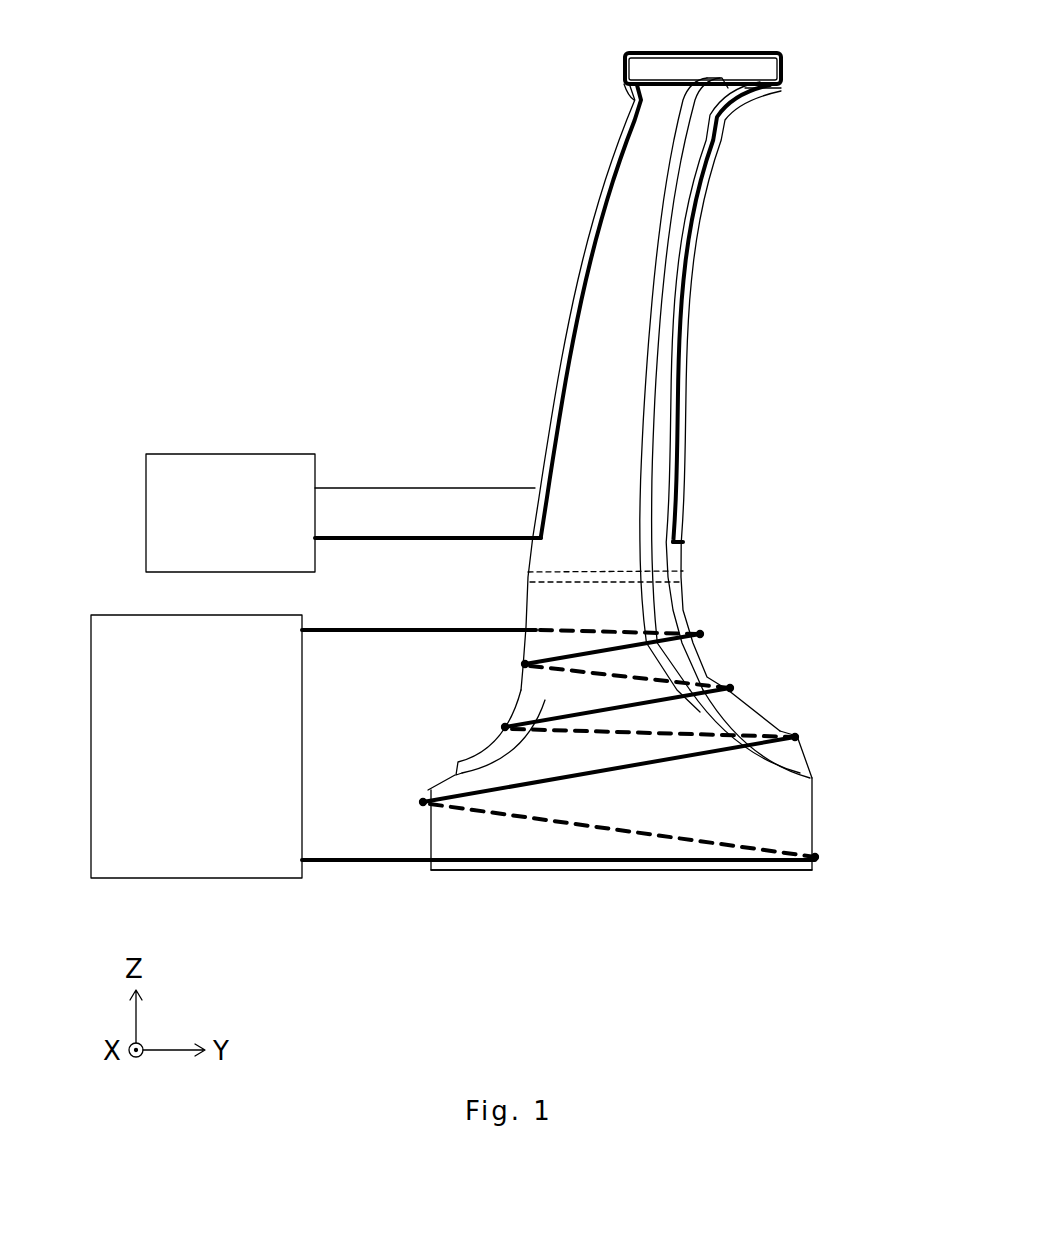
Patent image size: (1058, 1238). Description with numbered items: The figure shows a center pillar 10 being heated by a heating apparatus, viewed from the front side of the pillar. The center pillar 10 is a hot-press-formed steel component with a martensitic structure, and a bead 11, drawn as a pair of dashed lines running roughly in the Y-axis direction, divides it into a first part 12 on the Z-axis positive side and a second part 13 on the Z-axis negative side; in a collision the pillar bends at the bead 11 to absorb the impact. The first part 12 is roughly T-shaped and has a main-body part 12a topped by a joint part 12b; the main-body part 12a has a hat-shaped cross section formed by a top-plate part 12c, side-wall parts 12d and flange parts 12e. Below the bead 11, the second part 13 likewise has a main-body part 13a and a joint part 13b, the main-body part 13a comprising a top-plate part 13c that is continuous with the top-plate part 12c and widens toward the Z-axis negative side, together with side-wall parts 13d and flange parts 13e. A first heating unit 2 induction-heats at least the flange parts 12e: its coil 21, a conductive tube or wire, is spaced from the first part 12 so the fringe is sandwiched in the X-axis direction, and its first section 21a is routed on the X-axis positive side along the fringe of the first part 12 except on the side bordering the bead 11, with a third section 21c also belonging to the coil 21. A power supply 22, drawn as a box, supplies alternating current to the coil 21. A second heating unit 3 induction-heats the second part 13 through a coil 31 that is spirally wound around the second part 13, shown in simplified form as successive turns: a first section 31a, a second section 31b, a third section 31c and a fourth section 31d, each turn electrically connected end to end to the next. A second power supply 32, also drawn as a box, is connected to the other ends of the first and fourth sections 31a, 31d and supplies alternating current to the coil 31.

The center pillar 10 is at (548, 270).
The first part 12 is at (736, 178).
The main-body part 12a is at (704, 362).
The joint part 12b is at (806, 78).
The top-plate part 12c is at (637, 290).
The side-wall parts 12d is at (668, 215).
The flange parts 12e is at (688, 394).
The first heating unit 2 is at (704, 461).
The coil 21 is at (396, 556).
The first section 21a is at (675, 483).
The third section 21c is at (684, 541).
The power supply 22 is at (146, 510).
The bead 11 is at (683, 571).
The second part 13 is at (836, 840).
The main-body part 13a is at (736, 650).
The joint part 13b is at (620, 866).
The top-plate part 13c is at (783, 765).
The side-wall parts 13d is at (812, 777).
The flange parts 13e is at (798, 752).
The second heating unit 3 is at (534, 882).
The coil 31 is at (373, 880).
The first section 31a is at (527, 663).
The second section 31b is at (512, 724).
The third section 31c is at (648, 768).
The fourth section 31d is at (740, 864).
The power supply 32 is at (91, 760).